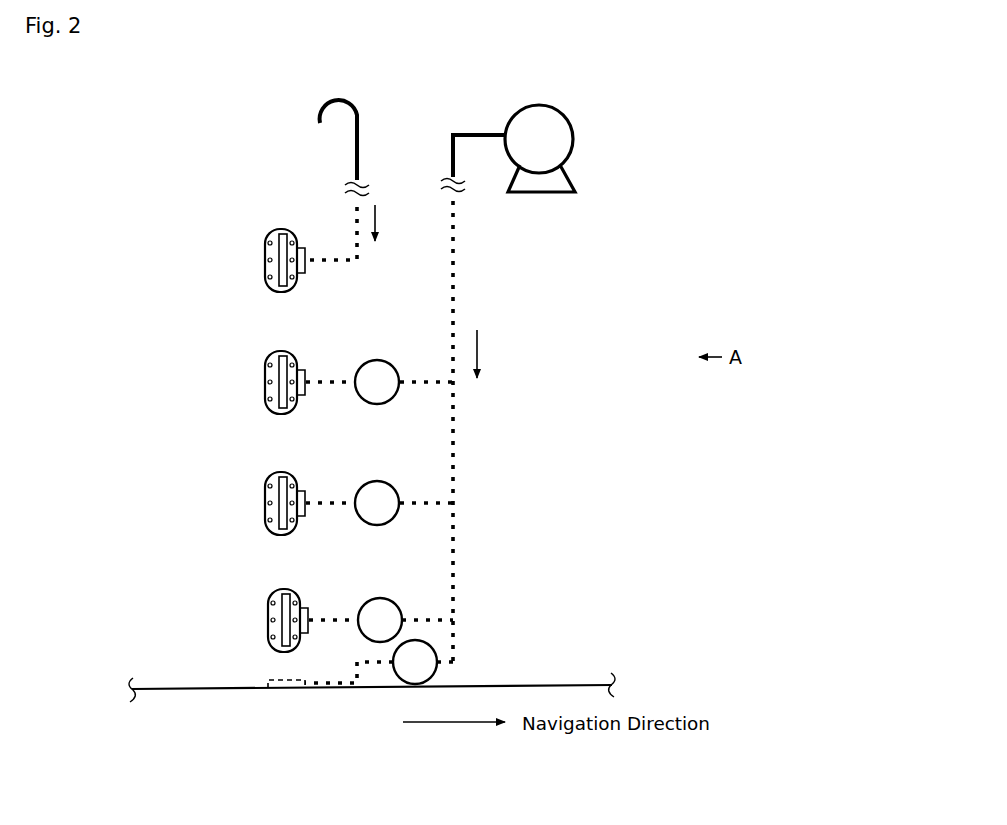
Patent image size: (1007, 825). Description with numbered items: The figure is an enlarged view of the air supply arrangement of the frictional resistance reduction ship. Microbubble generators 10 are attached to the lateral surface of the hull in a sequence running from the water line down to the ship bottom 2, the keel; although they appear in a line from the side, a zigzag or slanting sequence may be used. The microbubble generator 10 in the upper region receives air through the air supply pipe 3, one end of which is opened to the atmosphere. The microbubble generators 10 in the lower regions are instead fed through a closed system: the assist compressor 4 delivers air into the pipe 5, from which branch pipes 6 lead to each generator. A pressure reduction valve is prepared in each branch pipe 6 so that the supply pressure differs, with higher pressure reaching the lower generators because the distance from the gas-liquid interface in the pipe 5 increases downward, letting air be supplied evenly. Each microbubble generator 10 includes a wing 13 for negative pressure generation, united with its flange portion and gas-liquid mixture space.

The ship bottom (keel) 2 is at (180, 693).
The air supply pipe 3 is at (354, 208).
The assist compressor 4 is at (557, 119).
The pipe 5 is at (455, 454).
The branch pipe 6 is at (333, 379).
The microbubble generator 10 is at (265, 260).
The wing for negative pressure generation 13 is at (283, 503).